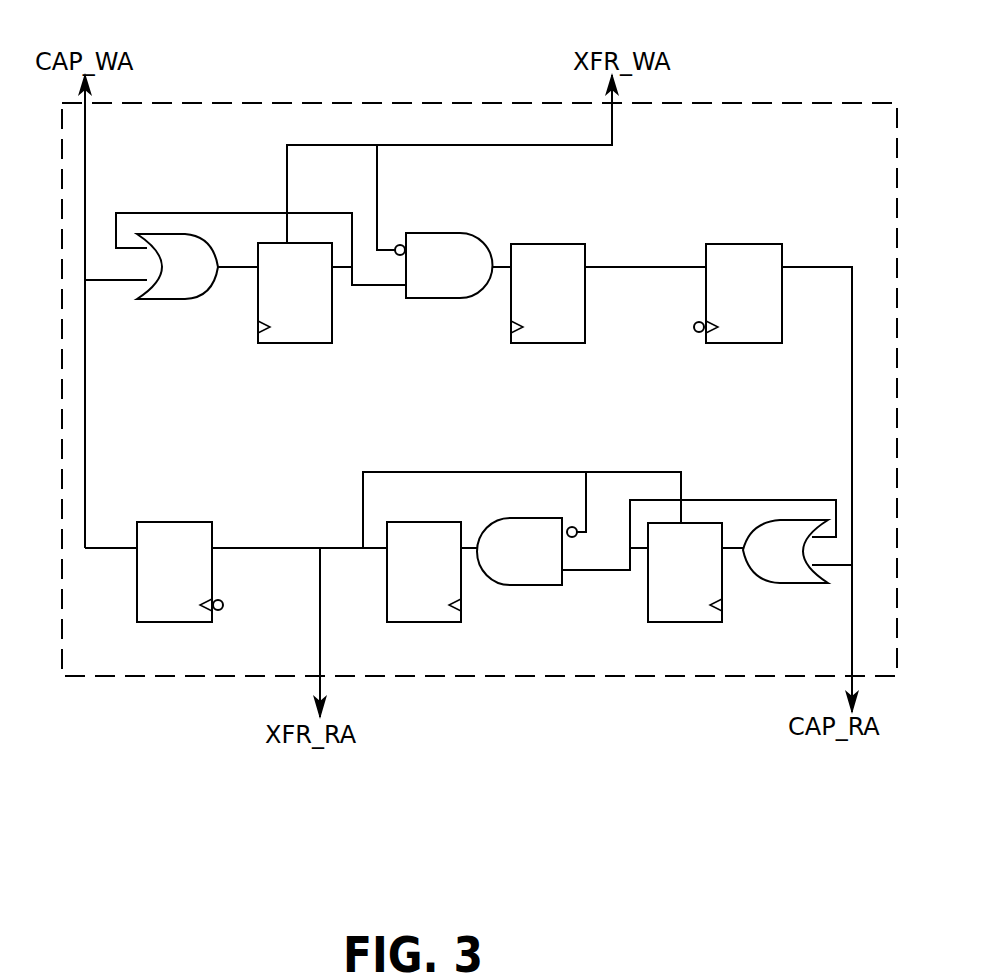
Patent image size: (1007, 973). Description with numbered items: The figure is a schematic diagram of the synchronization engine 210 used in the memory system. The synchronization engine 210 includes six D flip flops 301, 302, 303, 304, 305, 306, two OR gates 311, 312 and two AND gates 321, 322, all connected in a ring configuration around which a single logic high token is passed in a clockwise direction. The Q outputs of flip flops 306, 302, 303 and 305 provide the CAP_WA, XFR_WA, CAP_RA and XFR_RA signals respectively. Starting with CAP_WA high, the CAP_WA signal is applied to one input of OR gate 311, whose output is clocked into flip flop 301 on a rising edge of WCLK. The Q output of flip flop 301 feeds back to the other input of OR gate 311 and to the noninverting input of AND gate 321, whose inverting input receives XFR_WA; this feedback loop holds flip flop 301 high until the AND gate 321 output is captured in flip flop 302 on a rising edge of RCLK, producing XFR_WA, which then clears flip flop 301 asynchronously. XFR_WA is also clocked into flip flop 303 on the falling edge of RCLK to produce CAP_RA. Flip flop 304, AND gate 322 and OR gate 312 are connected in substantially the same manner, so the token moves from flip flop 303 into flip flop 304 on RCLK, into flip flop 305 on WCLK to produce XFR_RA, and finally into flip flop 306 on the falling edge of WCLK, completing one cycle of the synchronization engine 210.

The synchronization engine 210 is at (202, 677).
The D flip flop 301 is at (258, 293).
The D flip flop 302 is at (516, 293).
The D flip flop 303 is at (707, 293).
The D flip flop 304 is at (717, 572).
The D flip flop 305 is at (461, 572).
The D flip flop 306 is at (218, 572).
The OR gate 311 is at (177, 266).
The OR gate 312 is at (785, 551).
The AND gate 321 is at (443, 265).
The AND gate 322 is at (527, 551).